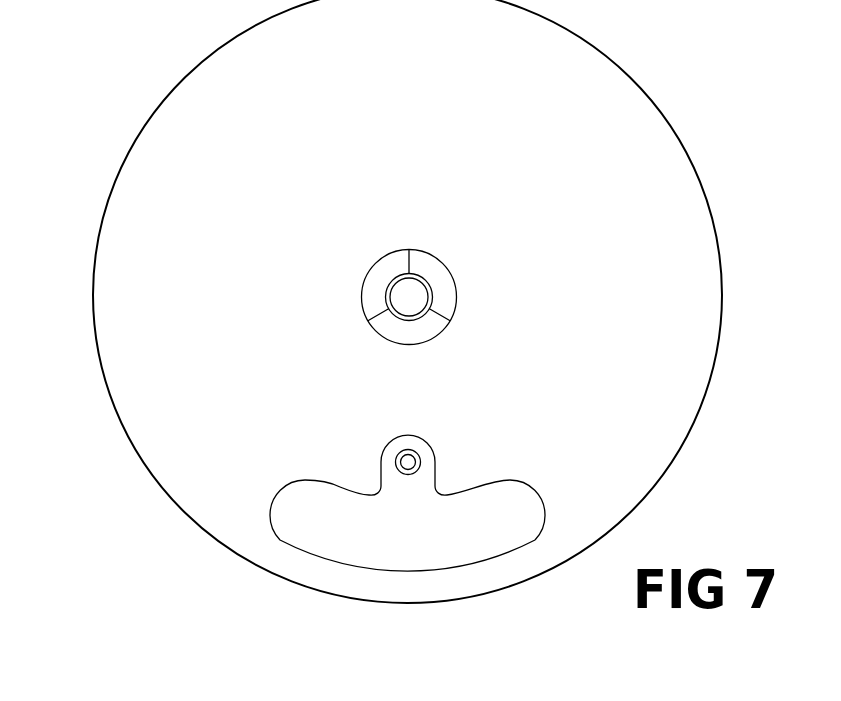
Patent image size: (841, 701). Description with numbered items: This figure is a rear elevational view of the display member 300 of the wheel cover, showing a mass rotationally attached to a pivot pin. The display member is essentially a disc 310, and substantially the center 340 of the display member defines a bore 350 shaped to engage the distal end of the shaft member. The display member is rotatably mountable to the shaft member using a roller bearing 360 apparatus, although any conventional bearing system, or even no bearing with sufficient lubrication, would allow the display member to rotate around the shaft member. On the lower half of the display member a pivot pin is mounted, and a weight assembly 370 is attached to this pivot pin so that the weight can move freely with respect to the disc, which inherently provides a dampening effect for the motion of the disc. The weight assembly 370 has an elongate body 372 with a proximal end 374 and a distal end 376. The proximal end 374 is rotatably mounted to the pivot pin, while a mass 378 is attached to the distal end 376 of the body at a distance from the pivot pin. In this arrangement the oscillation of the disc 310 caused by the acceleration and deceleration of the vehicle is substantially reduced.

The display member 300 is at (160, 66).
The disc 310 is at (123, 383).
The center 340 is at (408, 295).
The bore 350 is at (405, 307).
The roller bearing 360 is at (421, 283).
The weight assembly 370 is at (308, 525).
The elongate body 372 is at (437, 470).
The proximal end 374 is at (405, 435).
The distal end 376 is at (377, 492).
The mass 378 is at (523, 530).